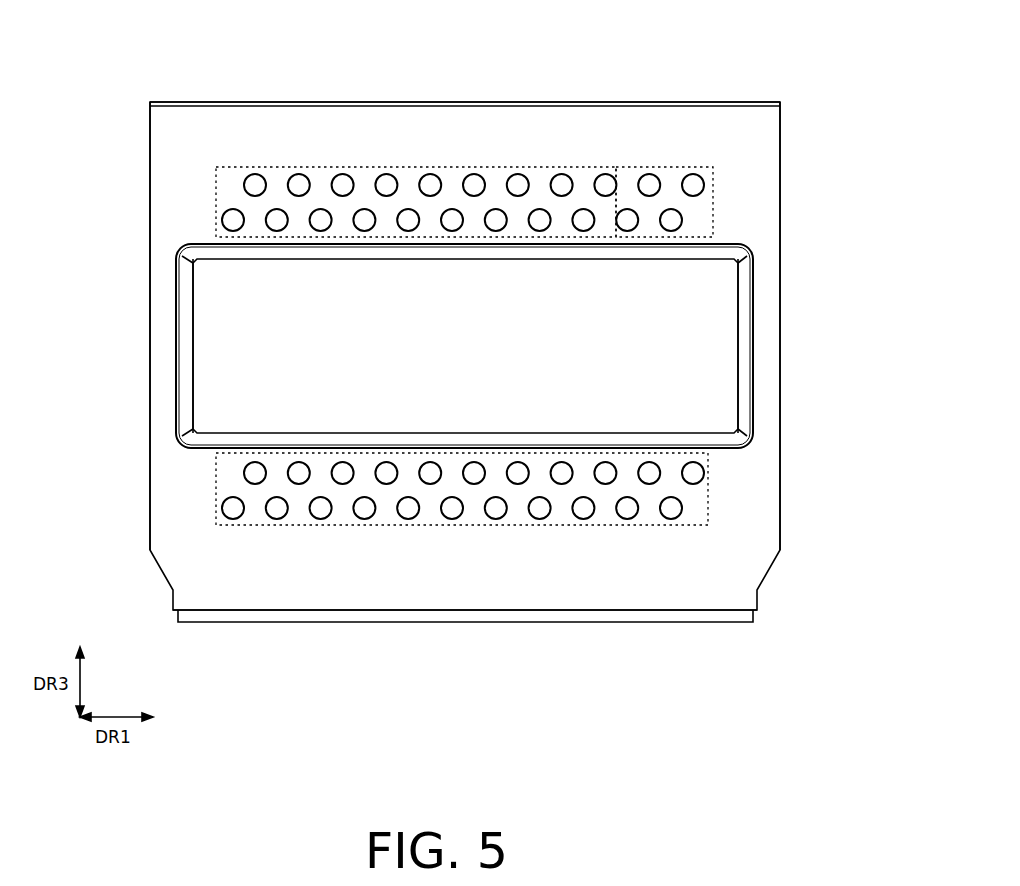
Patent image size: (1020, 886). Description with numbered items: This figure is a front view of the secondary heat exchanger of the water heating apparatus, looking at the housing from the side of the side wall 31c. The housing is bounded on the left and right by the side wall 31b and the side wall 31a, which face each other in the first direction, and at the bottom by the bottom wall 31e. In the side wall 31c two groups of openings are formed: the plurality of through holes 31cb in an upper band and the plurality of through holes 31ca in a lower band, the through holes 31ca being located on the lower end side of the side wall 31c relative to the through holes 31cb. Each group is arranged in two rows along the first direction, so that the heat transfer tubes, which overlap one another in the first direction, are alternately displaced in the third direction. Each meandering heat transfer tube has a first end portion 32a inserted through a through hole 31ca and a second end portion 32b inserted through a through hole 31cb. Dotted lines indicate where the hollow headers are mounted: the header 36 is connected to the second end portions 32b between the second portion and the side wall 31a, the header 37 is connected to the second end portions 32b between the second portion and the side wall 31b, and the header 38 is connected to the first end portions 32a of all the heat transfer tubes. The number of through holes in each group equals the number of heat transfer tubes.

The side wall 31a is at (780, 331).
The side wall 31b is at (150, 337).
The side wall 31c is at (440, 128).
The through holes 31ca is at (222, 500).
The through holes 31cb is at (222, 213).
The bottom wall 31e is at (482, 622).
The first end portion 32a is at (703, 475).
The second end portion 32b is at (703, 182).
The header 36 is at (662, 165).
The header 37 is at (325, 165).
The header 38 is at (640, 525).